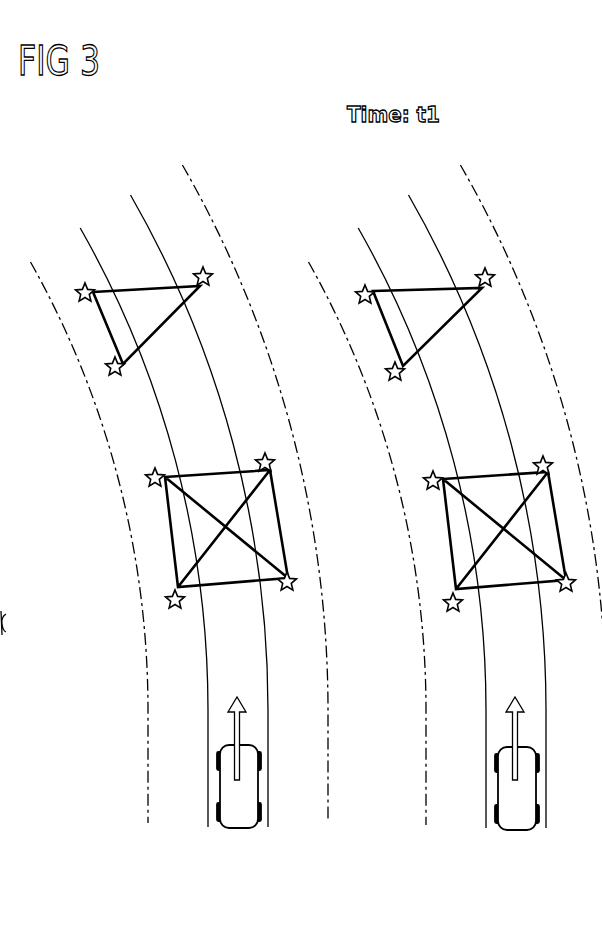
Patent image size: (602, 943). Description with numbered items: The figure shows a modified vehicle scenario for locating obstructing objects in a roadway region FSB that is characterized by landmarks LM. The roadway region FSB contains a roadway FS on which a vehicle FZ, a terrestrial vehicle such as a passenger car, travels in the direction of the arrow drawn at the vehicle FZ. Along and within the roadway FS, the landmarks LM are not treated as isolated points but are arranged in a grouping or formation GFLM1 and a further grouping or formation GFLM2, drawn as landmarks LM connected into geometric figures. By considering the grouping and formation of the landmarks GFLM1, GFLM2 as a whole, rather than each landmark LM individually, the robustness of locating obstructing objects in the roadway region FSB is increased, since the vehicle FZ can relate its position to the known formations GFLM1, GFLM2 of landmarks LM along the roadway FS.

The roadway FS is at (130, 203).
The roadway region FSB is at (202, 180).
The landmarks LM is at (79, 282).
The grouping or formation of landmarks GFLM1 is at (430, 542).
The grouping or formation of landmarks GFLM2 is at (366, 340).
The vehicle FZ is at (220, 788).